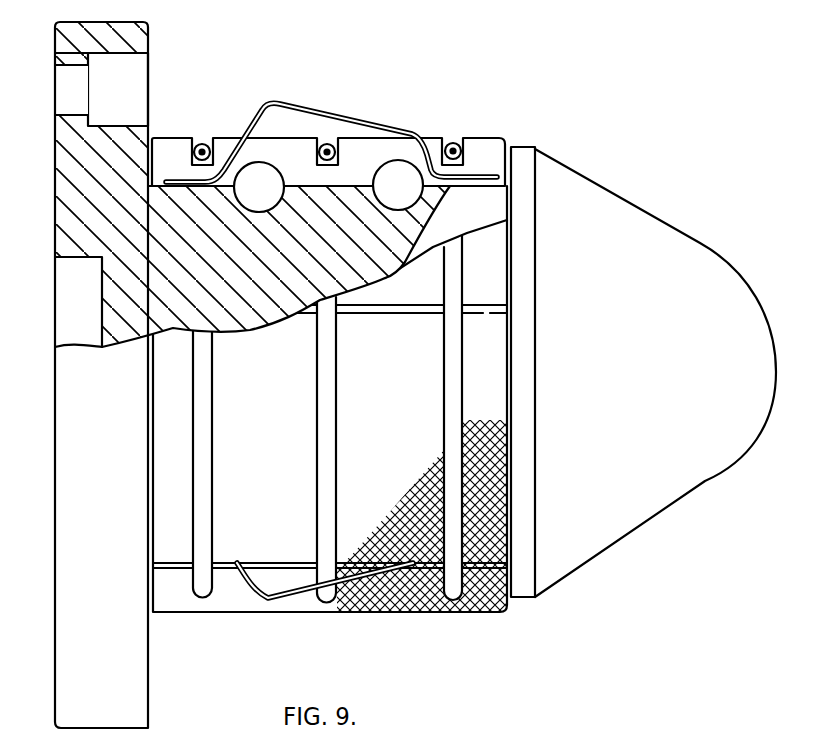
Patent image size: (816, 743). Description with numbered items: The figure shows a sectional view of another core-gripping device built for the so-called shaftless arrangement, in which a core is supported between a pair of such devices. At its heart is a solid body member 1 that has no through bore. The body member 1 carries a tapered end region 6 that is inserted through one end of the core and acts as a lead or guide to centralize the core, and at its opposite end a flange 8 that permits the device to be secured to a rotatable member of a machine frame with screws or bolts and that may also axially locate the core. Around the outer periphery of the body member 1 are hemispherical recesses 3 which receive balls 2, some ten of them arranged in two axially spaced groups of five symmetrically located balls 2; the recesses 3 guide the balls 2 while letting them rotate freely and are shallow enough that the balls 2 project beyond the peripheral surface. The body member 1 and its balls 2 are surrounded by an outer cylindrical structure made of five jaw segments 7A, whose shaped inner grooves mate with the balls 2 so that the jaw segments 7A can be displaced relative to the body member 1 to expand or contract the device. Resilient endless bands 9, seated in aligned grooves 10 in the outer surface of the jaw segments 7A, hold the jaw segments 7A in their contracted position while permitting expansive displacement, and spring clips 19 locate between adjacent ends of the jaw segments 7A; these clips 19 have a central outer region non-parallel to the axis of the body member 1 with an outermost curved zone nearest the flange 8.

The body member 1 is at (192, 202).
The balls 2 is at (396, 176).
The recesses 3 is at (258, 210).
The tapered end region 6 is at (560, 200).
The jaw segments 7A is at (473, 148).
The flange 8 is at (137, 40).
The endless bands 9 is at (201, 144).
The grooves 10 is at (209, 600).
The spring clips 19 is at (263, 104).